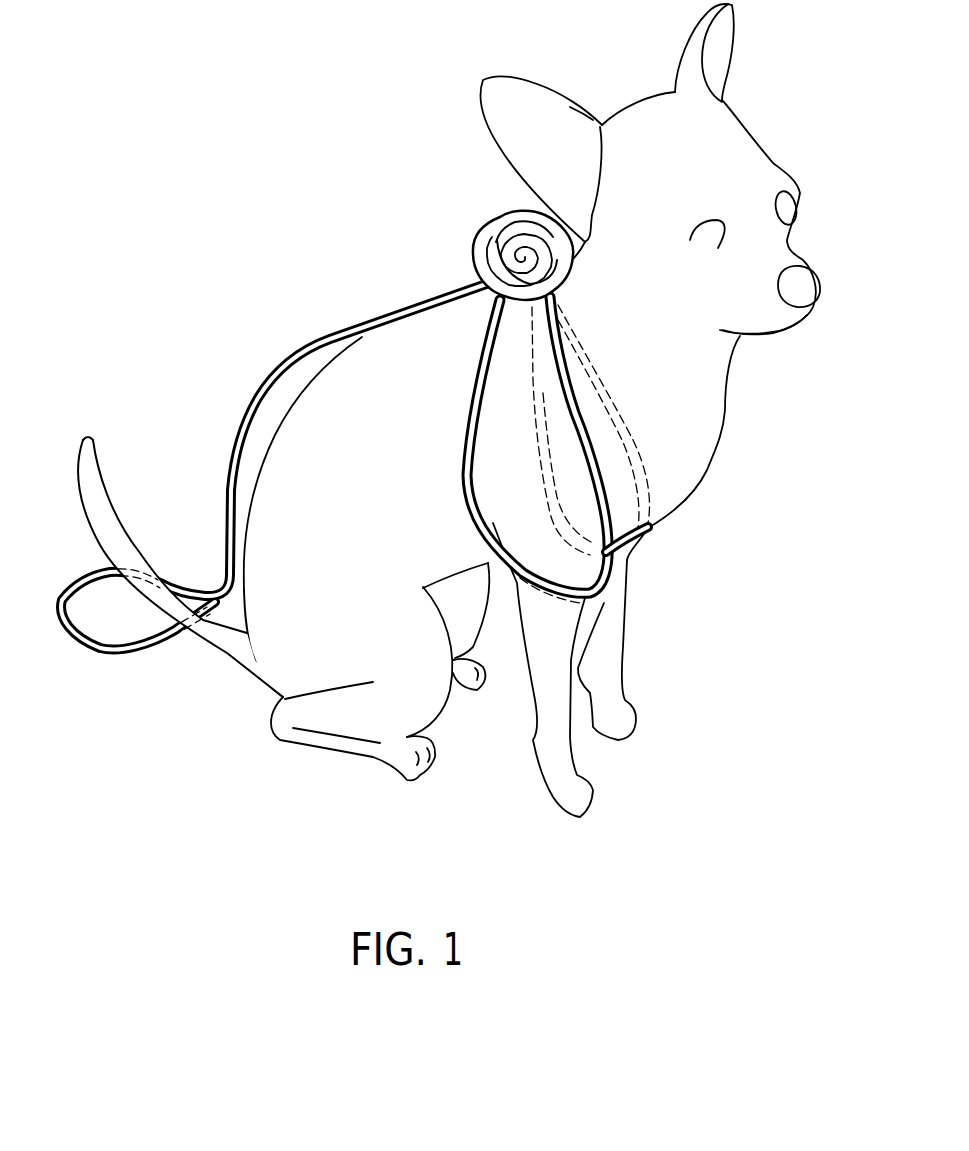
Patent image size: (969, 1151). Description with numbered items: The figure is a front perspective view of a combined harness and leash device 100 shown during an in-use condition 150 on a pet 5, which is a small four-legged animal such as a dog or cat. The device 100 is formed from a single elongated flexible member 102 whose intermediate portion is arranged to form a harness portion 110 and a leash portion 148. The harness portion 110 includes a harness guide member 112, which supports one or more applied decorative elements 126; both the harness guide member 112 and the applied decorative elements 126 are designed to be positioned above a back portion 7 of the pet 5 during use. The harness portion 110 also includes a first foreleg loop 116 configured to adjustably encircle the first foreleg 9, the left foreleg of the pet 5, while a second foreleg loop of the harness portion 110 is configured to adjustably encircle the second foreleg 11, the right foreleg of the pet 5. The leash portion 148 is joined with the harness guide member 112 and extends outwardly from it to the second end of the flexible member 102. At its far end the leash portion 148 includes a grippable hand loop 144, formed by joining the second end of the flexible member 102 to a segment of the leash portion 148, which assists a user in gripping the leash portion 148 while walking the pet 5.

The pet 5 is at (717, 440).
The back portion 7 is at (440, 313).
The first foreleg 9 is at (620, 648).
The second foreleg 11 is at (537, 713).
The combined harness and leash device 100 is at (543, 361).
The elongated flexible member 102 is at (274, 484).
The harness portion 110 is at (692, 597).
The harness guide member 112 is at (461, 235).
The first foreleg loop 116 is at (647, 537).
The applied decorative elements 126 is at (483, 247).
The grippable hand loop 144 is at (123, 652).
The leash portion 148 is at (240, 398).
The in-use condition 150 is at (431, 358).